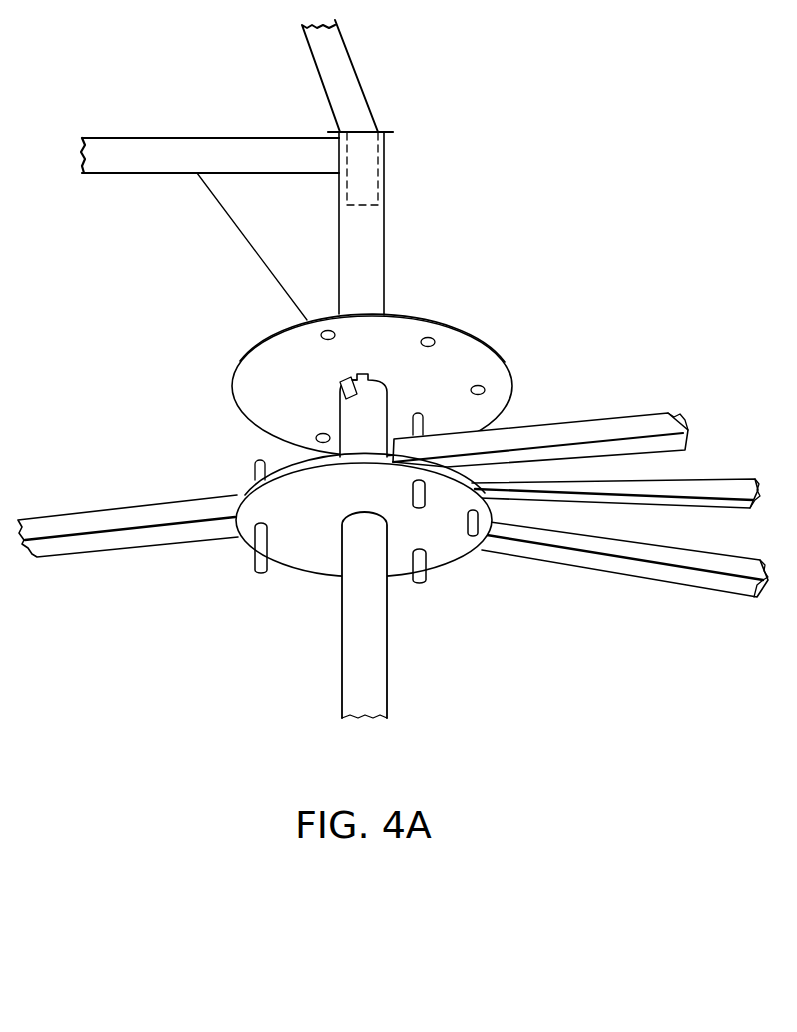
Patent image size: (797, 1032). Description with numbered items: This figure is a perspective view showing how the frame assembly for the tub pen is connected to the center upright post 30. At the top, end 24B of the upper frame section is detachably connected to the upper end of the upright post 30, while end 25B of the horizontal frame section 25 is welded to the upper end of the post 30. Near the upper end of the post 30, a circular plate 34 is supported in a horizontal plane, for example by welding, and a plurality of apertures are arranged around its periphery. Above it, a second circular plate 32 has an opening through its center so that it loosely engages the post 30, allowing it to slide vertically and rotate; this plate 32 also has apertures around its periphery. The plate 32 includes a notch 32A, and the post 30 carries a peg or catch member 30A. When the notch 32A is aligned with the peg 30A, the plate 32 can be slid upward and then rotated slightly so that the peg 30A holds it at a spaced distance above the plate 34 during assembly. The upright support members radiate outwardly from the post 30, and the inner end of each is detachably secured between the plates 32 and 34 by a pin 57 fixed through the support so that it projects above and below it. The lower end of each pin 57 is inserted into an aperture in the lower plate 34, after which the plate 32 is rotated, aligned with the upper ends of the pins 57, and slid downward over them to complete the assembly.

The end of upper frame section 24B is at (358, 93).
The frame section 25 is at (95, 147).
The end of frame section 25B is at (225, 148).
The circular plate 32 is at (475, 335).
The notch 32A is at (375, 370).
The peg or catch member 30A is at (340, 385).
The circular plate 34 is at (318, 572).
The upright post 30 is at (382, 683).
The pin 57 is at (257, 553).